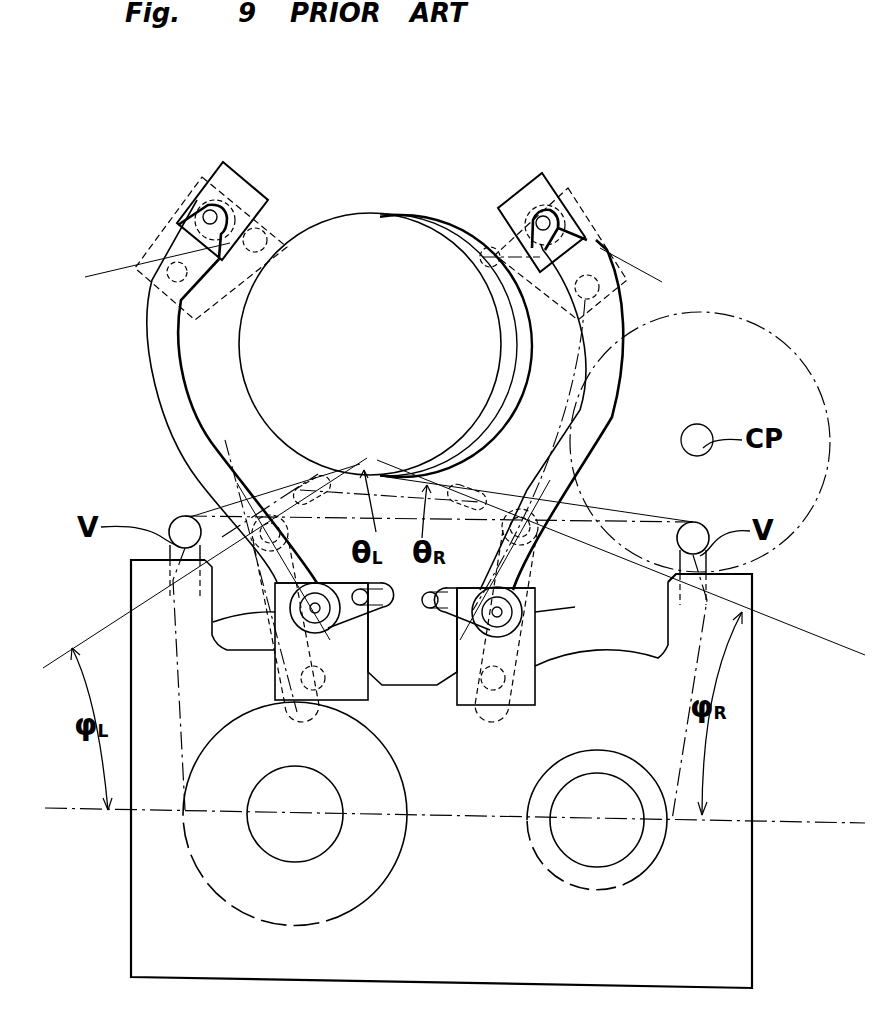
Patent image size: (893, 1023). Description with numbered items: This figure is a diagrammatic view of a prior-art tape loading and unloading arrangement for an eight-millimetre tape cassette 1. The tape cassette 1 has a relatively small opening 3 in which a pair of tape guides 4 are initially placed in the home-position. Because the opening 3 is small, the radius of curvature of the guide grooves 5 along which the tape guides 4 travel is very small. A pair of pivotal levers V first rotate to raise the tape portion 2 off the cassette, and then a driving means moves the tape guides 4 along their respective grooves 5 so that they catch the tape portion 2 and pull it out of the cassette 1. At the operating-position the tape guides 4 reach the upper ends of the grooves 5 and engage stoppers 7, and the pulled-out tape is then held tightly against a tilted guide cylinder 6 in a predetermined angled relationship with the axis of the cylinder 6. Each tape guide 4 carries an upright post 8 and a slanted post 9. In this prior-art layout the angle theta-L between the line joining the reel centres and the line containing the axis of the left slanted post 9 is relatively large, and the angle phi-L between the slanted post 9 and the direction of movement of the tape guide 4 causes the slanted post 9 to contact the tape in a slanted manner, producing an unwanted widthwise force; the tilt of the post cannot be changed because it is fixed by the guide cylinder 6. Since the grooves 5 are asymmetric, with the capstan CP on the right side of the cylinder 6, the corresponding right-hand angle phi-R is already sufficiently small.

The tape cassette 1 is at (131, 906).
The tape portion 2 is at (176, 682).
The opening 3 is at (618, 645).
The tape guide 4 is at (283, 667).
The guide groove 5 is at (162, 412).
The tilted guide cylinder 6 is at (375, 243).
The stopper 7 is at (237, 192).
The upright post 8 is at (305, 608).
The slanted post 9 is at (372, 608).